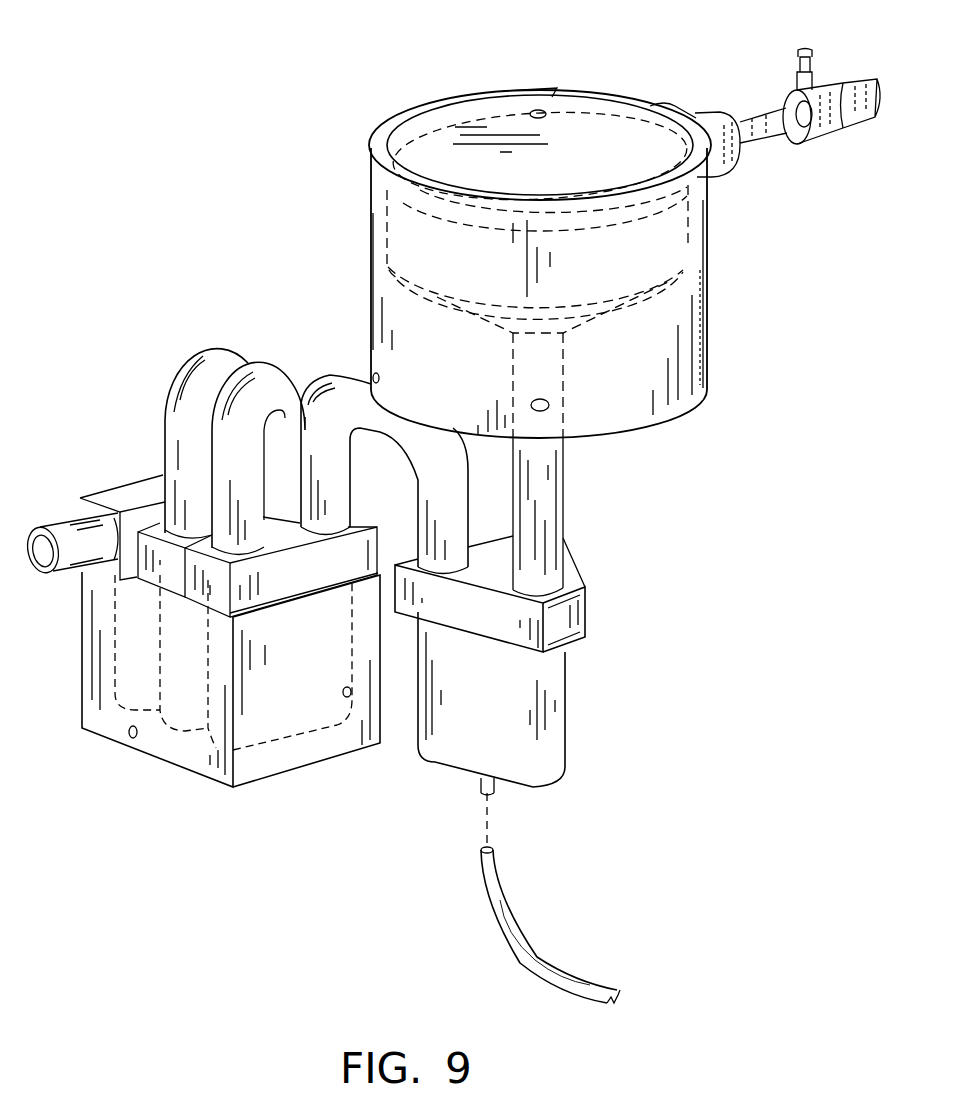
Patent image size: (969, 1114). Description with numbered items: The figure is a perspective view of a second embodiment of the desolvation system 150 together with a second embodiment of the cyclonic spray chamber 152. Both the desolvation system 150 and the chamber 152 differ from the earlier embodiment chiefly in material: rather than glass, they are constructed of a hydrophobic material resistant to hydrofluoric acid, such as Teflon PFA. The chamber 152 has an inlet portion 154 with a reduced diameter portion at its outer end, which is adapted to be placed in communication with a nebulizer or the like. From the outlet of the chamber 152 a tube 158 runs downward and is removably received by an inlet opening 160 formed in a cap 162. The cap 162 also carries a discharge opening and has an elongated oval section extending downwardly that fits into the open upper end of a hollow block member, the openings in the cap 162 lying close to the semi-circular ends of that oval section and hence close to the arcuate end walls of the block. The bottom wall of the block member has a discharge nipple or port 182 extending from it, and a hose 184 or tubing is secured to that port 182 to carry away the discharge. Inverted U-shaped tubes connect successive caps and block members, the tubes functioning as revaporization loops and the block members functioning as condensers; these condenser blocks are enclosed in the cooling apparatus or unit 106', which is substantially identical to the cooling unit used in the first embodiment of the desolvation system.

The desolvation system 150 is at (128, 383).
The cyclonic spray chamber 152 is at (658, 245).
The inlet portion 154 is at (712, 122).
The tube 158 is at (545, 530).
The inlet opening 160 is at (562, 588).
The cap 162 is at (588, 622).
The discharge nipple or port 182 is at (497, 793).
The hose 184 is at (518, 920).
The cooling apparatus or unit 106' is at (231, 728).